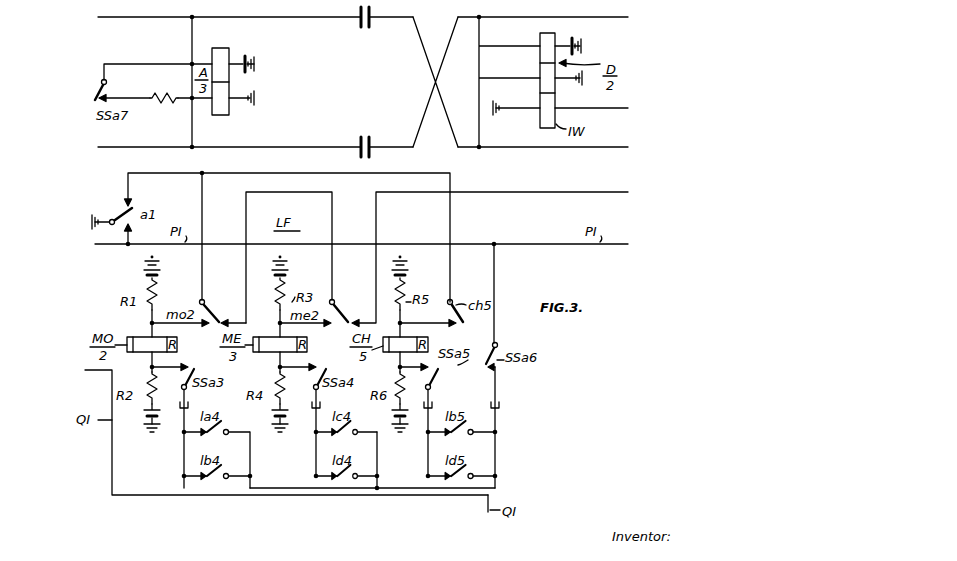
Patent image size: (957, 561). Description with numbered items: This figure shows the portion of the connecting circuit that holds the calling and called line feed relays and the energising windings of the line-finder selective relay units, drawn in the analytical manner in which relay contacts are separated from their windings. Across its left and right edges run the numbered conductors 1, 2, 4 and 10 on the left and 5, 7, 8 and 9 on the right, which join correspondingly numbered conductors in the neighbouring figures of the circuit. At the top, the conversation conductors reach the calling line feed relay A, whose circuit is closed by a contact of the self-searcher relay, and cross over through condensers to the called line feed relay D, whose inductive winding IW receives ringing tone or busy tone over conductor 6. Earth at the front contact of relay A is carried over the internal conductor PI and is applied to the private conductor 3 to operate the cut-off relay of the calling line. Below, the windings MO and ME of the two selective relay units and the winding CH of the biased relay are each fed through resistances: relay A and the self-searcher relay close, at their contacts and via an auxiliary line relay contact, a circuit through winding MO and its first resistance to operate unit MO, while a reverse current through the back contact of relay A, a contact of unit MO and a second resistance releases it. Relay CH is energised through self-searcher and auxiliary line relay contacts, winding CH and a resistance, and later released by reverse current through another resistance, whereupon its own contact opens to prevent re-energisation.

The conductor 1 is at (251, 17).
The conductor 2 is at (248, 147).
The private conductor 3 is at (285, 246).
The conductor 4 is at (279, 429).
The conductor 5 is at (550, 17).
The conductor 6 is at (567, 108).
The conductor 7 is at (550, 147).
The conductor 8 is at (384, 249).
The conductor 9 is at (567, 291).
The conductor 10 is at (478, 515).